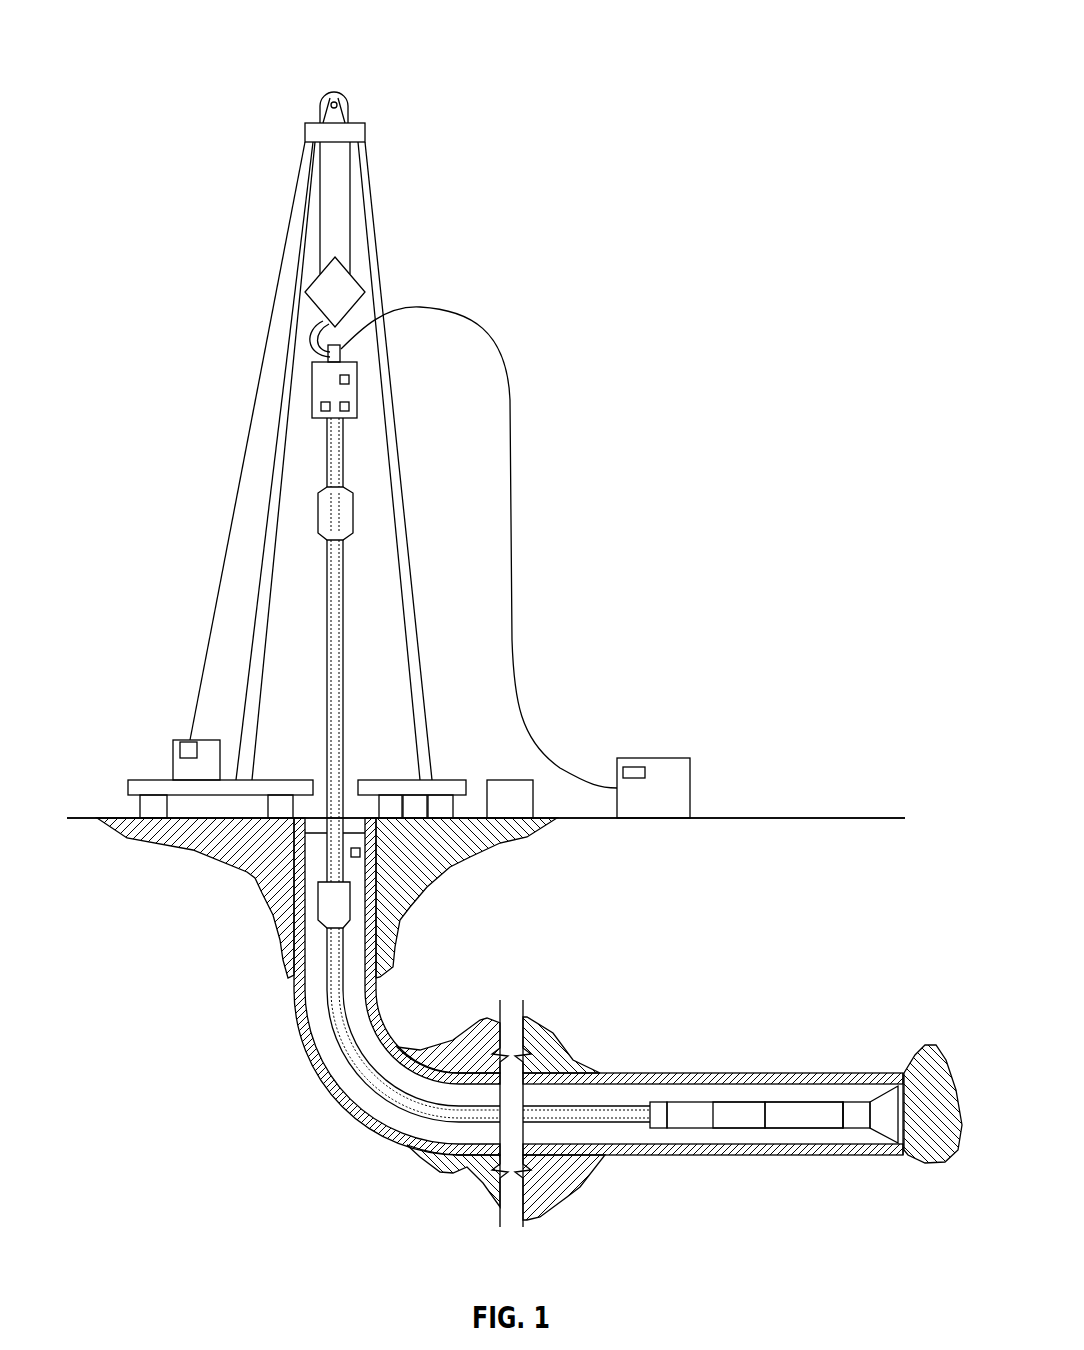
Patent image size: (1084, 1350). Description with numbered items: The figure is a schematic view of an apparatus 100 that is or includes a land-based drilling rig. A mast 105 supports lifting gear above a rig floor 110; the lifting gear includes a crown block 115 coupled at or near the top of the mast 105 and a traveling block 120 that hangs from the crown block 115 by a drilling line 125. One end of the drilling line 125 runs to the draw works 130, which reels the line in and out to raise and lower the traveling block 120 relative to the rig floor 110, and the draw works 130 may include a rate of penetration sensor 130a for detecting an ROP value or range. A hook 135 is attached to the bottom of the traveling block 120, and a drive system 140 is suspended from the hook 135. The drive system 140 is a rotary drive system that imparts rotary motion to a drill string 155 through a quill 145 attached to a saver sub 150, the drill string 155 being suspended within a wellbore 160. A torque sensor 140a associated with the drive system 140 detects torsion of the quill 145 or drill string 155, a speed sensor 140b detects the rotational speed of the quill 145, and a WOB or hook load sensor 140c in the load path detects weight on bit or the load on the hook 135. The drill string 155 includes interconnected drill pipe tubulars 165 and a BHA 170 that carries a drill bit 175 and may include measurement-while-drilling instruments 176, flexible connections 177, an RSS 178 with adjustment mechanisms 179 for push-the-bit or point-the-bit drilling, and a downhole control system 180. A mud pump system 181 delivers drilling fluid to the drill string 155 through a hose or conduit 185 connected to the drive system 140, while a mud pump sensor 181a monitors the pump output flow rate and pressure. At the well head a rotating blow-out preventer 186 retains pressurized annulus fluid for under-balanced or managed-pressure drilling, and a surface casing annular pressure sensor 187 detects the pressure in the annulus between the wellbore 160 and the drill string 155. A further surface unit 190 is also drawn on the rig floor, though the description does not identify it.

The apparatus 100 is at (637, 35).
The mast 105 is at (372, 192).
The rig floor 110 is at (128, 787).
The crown block 115 is at (337, 92).
The traveling block 120 is at (360, 295).
The drilling line 125 is at (320, 190).
The draw works 130 is at (174, 771).
The rate of penetration sensor 130a is at (181, 750).
The hook 135 is at (310, 333).
The drive system 140 is at (310, 372).
The torque sensor 140a is at (320, 407).
The speed sensor 140b is at (352, 378).
The WOB or hook load sensor 140c is at (350, 406).
The quill 145 is at (325, 455).
The saver sub 150 is at (317, 512).
The drill string 155 is at (316, 603).
The wellbore 160 is at (322, 1040).
The drill pipe or tubulars 165 is at (327, 755).
The BHA 170 is at (838, 1057).
The drill bit 175 is at (882, 1098).
The measurement-while-drilling or wireline conveyed instruments 176 is at (697, 1100).
The flexible connections 177 is at (753, 1108).
The RSS 178 is at (817, 1102).
The adjustment mechanisms 179 is at (848, 1118).
The downhole control system 180 is at (657, 1105).
The mud pump system 181 is at (661, 758).
The mud pump sensor 181a is at (634, 767).
The hose or other conduit 185 is at (513, 541).
The rotating blow-out preventer 186 is at (316, 823).
The surface casing annular pressure sensor 187 is at (360, 853).
The mud pump 190 is at (510, 780).